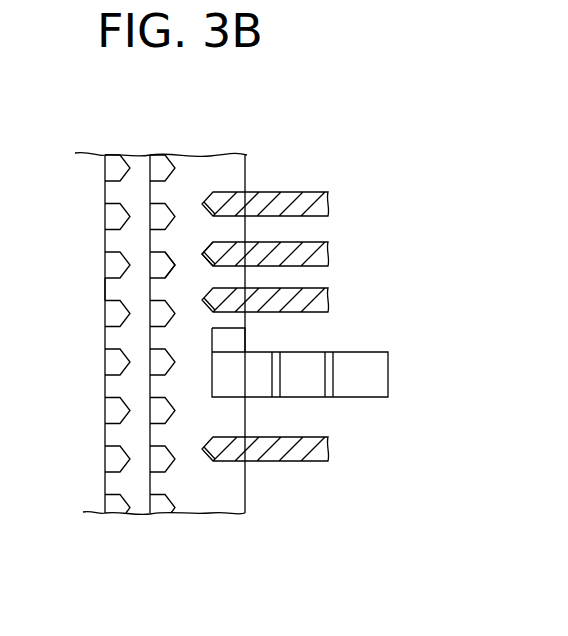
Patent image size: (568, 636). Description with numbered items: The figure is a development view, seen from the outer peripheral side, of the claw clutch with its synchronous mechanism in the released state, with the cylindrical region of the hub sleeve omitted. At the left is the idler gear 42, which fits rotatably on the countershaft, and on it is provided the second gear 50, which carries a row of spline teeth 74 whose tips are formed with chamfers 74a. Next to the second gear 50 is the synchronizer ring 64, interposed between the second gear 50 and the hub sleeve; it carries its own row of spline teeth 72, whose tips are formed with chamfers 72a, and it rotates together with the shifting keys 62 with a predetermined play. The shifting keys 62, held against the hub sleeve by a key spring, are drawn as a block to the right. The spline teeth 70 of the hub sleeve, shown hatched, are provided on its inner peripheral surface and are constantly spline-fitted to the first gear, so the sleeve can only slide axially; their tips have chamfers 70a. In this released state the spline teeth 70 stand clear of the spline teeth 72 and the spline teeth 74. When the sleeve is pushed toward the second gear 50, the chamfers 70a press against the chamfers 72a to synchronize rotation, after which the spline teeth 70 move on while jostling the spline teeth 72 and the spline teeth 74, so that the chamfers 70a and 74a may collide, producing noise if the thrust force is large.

The idler gear 42 is at (93, 493).
The second gear 50 is at (140, 497).
The synchronizer ring 64 is at (190, 490).
The spline teeth 74 is at (125, 159).
The chamfers 74a is at (116, 272).
The spline teeth 72 is at (178, 156).
The chamfers 72a is at (173, 257).
The spline teeth 70 is at (315, 252).
The chamfers 70a is at (208, 250).
The shifting keys 62 is at (365, 388).